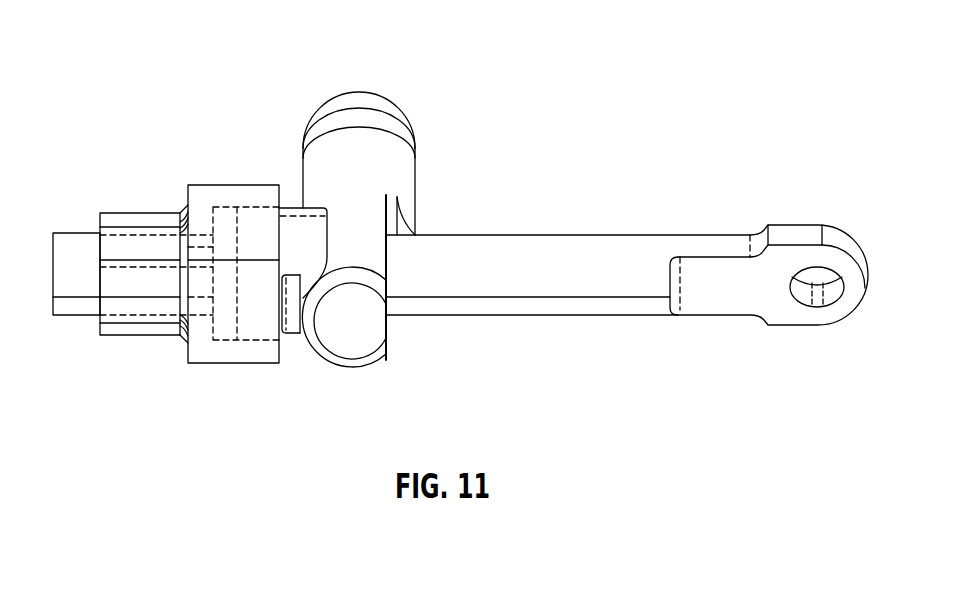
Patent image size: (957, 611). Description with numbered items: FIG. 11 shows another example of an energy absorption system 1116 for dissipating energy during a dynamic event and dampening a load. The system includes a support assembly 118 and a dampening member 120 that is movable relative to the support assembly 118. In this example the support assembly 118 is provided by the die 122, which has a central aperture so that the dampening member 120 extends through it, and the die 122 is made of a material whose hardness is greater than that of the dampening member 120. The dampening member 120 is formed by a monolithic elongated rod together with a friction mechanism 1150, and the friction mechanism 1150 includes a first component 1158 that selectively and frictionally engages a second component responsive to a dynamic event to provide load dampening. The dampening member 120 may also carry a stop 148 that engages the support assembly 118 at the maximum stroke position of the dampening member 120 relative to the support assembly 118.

The energy absorption system 1116 is at (694, 91).
The support assembly 118 is at (393, 148).
The die 122 is at (330, 107).
The first component 1158 is at (287, 210).
The friction mechanism 1150 is at (287, 343).
The stop 148 is at (210, 207).
The dampening member 120 is at (568, 260).